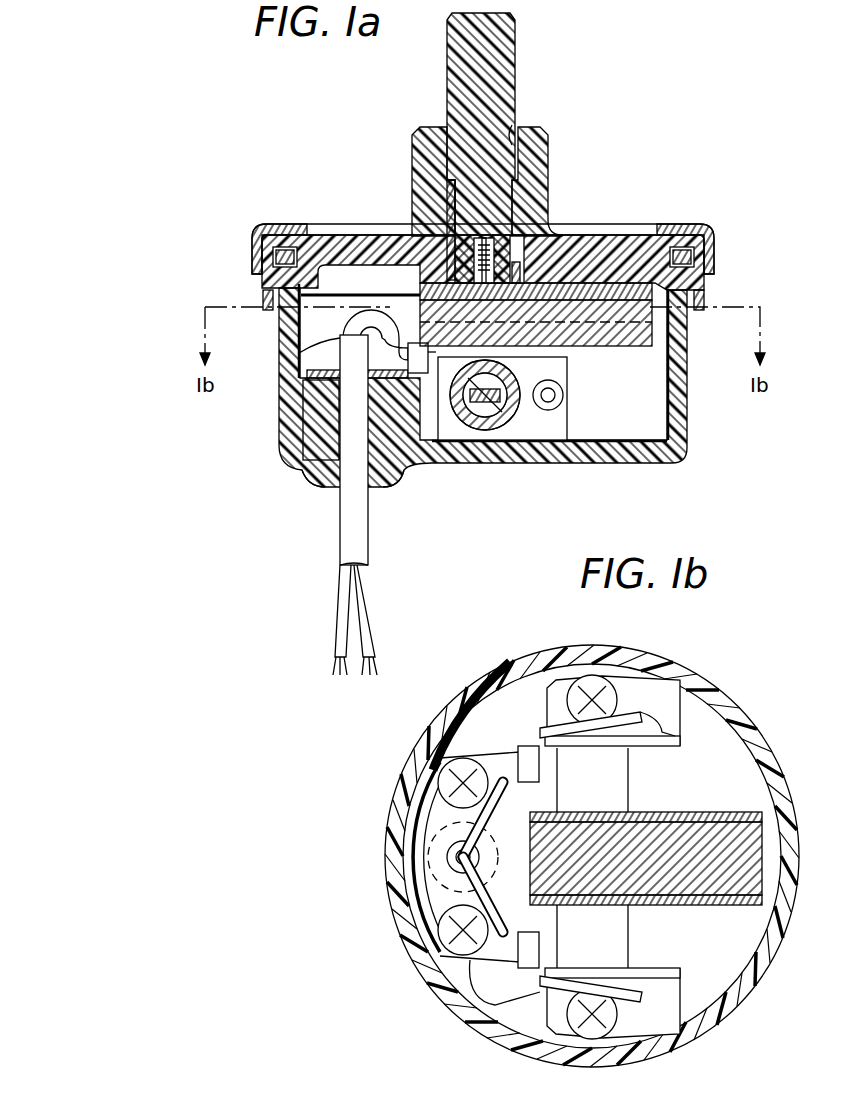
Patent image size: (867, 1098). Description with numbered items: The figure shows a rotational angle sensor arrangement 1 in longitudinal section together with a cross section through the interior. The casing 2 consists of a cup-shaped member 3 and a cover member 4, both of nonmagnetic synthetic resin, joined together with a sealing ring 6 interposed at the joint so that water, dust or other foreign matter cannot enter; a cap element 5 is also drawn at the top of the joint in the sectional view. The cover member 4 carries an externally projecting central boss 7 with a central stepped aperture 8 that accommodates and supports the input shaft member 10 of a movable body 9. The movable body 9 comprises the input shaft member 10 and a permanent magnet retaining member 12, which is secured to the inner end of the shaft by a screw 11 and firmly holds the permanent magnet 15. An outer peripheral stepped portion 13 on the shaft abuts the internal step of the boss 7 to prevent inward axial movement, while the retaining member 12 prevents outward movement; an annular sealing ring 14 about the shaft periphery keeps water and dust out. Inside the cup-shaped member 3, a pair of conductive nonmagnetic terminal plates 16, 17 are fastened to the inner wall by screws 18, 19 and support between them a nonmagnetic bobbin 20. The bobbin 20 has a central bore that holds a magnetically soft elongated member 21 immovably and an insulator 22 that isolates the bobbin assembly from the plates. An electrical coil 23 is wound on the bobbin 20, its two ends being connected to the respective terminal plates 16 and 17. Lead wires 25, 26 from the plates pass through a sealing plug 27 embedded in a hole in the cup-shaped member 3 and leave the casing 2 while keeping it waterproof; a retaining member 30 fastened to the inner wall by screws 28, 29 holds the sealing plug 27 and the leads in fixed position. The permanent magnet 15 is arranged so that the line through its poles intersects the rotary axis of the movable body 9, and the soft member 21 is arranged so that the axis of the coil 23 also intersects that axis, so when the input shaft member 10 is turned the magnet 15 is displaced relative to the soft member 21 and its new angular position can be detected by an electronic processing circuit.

In FIG. 1A, the rotational angle sensor arrangement 1 is at (676, 182).
In FIG. 1A, the casing 2 is at (689, 392).
In FIG. 1B, the casing 2 is at (776, 745).
In FIG. 1A, the cup-shaped member 3 is at (632, 456).
In FIG. 1B, the cup-shaped member 3 is at (738, 730).
In FIG. 1A, the cover member 4 is at (587, 248).
In FIG. 1A, the cover cap 5 is at (705, 232).
In FIG. 1A, the sealing ring 6 is at (693, 255).
In FIG. 1A, the central boss 7 is at (544, 154).
In FIG. 1A, the central stepped aperture 8 is at (512, 134).
In FIG. 1A, the movable body 9 is at (615, 255).
In FIG. 1A, the input shaft member 10 is at (462, 93).
In FIG. 1A, the screw 11 is at (476, 258).
In FIG. 1A, the permanent magnet retaining member 12 is at (607, 270).
In FIG. 1B, the permanent magnet retaining member 12 is at (740, 815).
In FIG. 1A, the outer peripheral stepped portion 13 is at (450, 165).
In FIG. 1A, the annular sealing ring 14 is at (520, 252).
In FIG. 1A, the permanent magnet 15 is at (645, 333).
In FIG. 1B, the permanent magnet 15 is at (745, 878).
In FIG. 1A, the terminal plate 16 is at (541, 430).
In FIG. 1B, the terminal plate 16 is at (668, 708).
In FIG. 1B, the terminal plate 17 is at (658, 1010).
In FIG. 1B, the screw 18 is at (603, 700).
In FIG. 1B, the screw 19 is at (590, 1018).
In FIG. 1A, the bobbin 20 is at (490, 412).
In FIG. 1A, the magnetically soft elongated member 21 is at (466, 418).
In FIG. 1A, the insulator 22 is at (476, 410).
In FIG. 1A, the electrical coil 23 is at (498, 420).
In FIG. 1B, the electrical coil 23 is at (612, 942).
In FIG. 1A, the lead wire 25 is at (370, 630).
In FIG. 1B, the lead wire 25 is at (522, 735).
In FIG. 1A, the lead wire 26 is at (322, 408).
In FIG. 1B, the lead wire 26 is at (530, 984).
In FIG. 1A, the sealing plug 27 is at (306, 478).
In FIG. 1A, the screw 28 is at (336, 362).
In FIG. 1B, the screw 28 is at (458, 778).
In FIG. 1B, the screw 29 is at (446, 938).
In FIG. 1A, the retaining member 30 is at (325, 385).
In FIG. 1B, the retaining member 30 is at (440, 903).